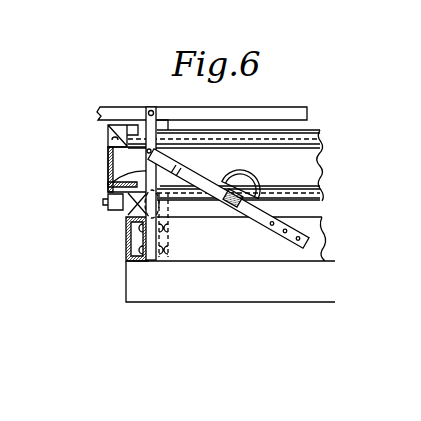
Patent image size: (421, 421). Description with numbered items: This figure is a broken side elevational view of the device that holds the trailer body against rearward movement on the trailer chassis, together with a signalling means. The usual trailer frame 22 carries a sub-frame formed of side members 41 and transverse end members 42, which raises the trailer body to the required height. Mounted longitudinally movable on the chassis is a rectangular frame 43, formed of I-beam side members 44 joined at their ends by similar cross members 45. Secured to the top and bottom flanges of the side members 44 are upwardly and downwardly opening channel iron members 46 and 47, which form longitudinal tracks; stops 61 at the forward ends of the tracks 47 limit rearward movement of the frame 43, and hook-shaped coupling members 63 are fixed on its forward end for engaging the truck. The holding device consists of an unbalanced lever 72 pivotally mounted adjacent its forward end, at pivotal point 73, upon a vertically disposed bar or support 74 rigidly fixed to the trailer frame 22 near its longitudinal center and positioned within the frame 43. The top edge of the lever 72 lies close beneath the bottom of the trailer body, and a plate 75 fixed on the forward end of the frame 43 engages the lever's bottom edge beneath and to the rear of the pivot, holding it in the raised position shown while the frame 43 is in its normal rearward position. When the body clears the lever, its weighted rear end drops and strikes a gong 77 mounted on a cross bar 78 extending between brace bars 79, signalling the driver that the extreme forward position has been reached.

The trailer frame 22 is at (203, 293).
The side members 41 is at (314, 231).
The transverse end members 42 is at (126, 242).
The frame 43 is at (324, 149).
The I-beam side members 44 is at (303, 168).
The cross members 45 is at (108, 166).
The upwardly opening channel iron members 46 is at (320, 131).
The downwardly opening channel iron members 47 is at (312, 198).
The stops 61 is at (132, 209).
The complementary coupling members 63 is at (103, 202).
The unbalanced lever 72 is at (221, 112).
The pivotal point 73 is at (152, 108).
The vertically disposed bar or support 74 is at (108, 185).
The plate 75 is at (126, 126).
The gong 77 is at (252, 181).
The cross bar 78 is at (230, 206).
The brace bars 79 is at (196, 175).